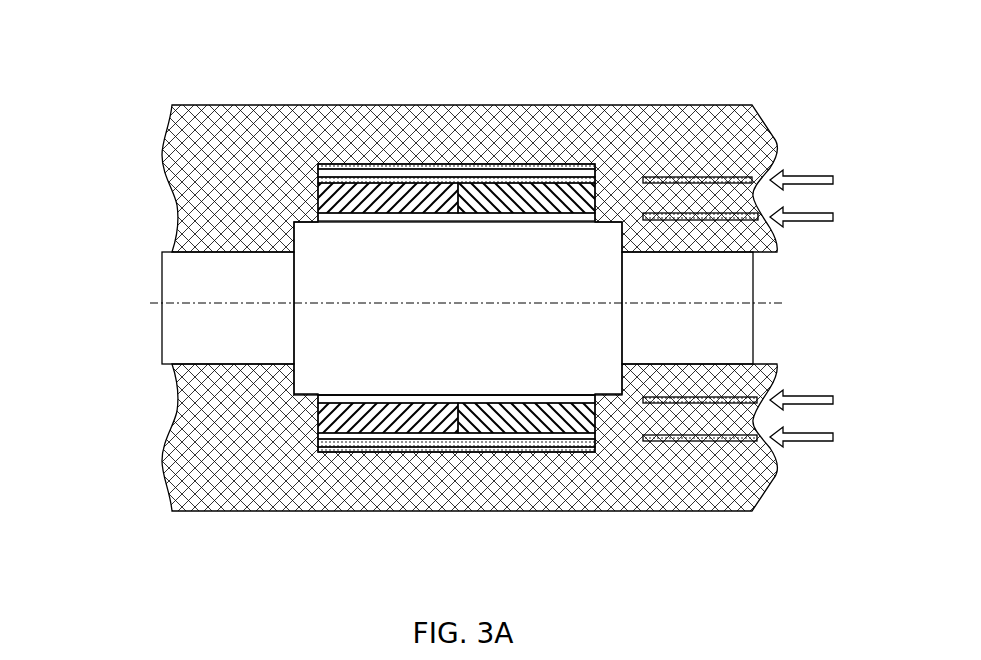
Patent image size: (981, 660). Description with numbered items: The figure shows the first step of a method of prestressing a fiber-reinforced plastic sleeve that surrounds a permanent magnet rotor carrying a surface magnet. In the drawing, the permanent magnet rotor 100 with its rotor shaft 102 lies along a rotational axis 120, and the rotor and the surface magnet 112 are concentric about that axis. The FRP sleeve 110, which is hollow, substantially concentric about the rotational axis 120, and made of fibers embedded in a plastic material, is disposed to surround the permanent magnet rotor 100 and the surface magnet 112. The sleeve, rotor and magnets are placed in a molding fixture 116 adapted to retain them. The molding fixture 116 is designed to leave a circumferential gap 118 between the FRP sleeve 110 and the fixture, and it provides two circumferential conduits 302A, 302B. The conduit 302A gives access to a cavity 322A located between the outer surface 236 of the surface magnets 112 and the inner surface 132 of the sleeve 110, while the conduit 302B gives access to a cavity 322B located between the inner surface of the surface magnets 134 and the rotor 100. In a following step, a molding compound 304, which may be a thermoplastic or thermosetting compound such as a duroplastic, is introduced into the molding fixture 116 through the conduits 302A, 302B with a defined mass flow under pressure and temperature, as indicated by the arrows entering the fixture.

The permanent magnet rotor 100 is at (140, 331).
The rotor shaft 102 is at (200, 327).
The FRP sleeve 110 is at (582, 173).
The surface magnet 112 is at (540, 202).
The molding fixture 116 is at (200, 460).
The circumferential gap 118 is at (518, 165).
The rotational axis 120 is at (214, 295).
The inner surface of the sleeve 132 is at (440, 423).
The inner surface of the surface magnets 134 is at (542, 384).
The outer surface of the surface magnets 236 is at (435, 171).
The circumferential conduit 302A is at (622, 179).
The circumferential conduit 302B is at (632, 216).
The molding compound 304 is at (690, 222).
The cavity 322A is at (352, 438).
The cavity 322B is at (348, 396).